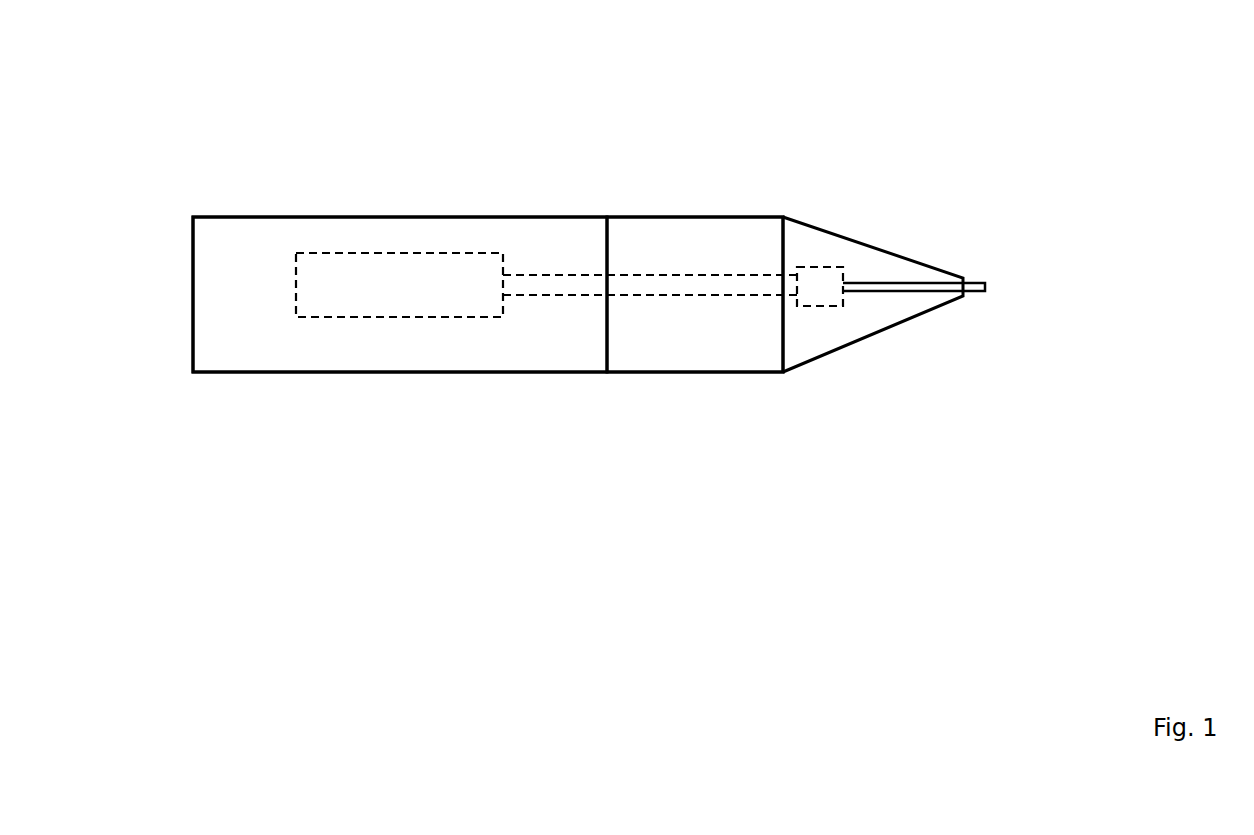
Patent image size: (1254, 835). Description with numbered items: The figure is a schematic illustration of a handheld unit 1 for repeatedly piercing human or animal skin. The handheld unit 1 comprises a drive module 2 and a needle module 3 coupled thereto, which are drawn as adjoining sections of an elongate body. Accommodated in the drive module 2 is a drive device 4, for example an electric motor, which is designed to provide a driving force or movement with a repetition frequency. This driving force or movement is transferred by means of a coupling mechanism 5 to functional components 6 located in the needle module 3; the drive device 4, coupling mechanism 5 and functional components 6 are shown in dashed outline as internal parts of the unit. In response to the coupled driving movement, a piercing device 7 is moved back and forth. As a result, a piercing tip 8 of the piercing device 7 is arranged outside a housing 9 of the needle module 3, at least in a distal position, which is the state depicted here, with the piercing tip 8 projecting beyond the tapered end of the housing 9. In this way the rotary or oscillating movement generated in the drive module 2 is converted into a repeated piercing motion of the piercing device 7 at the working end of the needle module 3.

The handheld unit 1 is at (929, 97).
The drive module 2 is at (225, 237).
The needle module 3 is at (729, 237).
The drive device 4 is at (397, 305).
The coupling mechanism 5 is at (657, 288).
The functional components 6 is at (819, 295).
The piercing device 7 is at (922, 288).
The piercing tip 8 is at (983, 291).
The housing 9 is at (738, 373).